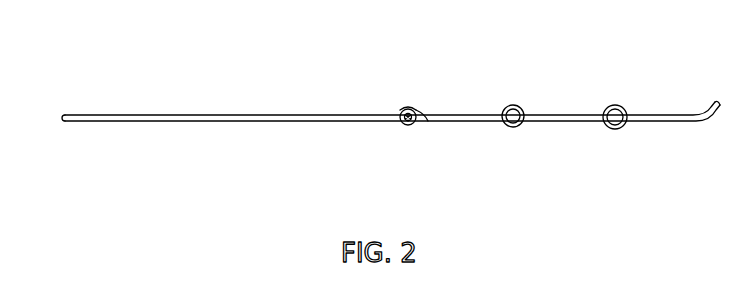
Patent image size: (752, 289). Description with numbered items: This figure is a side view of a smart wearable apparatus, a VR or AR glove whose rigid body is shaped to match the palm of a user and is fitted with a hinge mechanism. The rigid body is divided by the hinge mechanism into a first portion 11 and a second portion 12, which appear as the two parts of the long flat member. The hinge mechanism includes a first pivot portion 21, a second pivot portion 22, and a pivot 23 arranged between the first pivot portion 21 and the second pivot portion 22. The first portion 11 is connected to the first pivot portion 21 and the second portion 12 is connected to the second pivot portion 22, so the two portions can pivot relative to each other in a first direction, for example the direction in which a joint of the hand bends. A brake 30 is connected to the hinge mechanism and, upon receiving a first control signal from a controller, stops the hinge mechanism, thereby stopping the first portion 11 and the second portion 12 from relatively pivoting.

The first portion 11 is at (445, 118).
The second portion 12 is at (345, 117).
The first pivot portion 21 is at (425, 116).
The second pivot portion 22 is at (395, 111).
The pivot 23 is at (413, 109).
The brake 30 is at (511, 112).